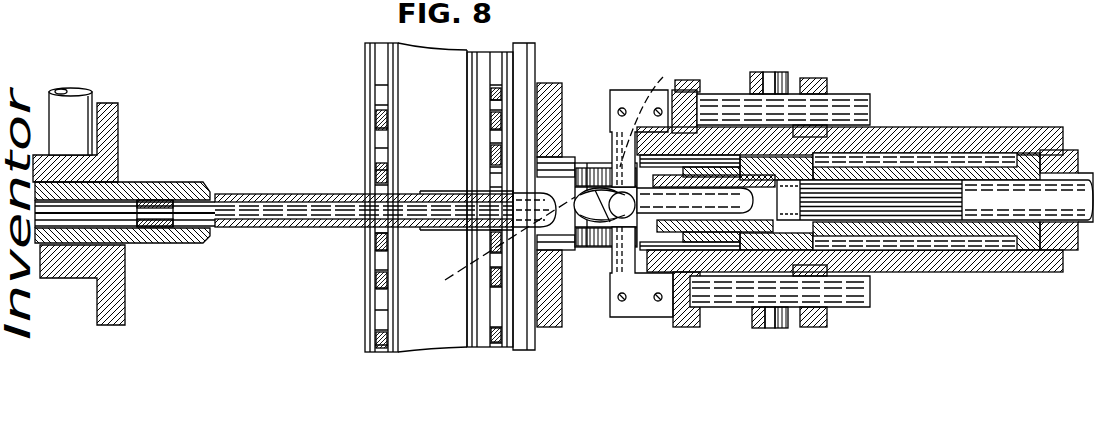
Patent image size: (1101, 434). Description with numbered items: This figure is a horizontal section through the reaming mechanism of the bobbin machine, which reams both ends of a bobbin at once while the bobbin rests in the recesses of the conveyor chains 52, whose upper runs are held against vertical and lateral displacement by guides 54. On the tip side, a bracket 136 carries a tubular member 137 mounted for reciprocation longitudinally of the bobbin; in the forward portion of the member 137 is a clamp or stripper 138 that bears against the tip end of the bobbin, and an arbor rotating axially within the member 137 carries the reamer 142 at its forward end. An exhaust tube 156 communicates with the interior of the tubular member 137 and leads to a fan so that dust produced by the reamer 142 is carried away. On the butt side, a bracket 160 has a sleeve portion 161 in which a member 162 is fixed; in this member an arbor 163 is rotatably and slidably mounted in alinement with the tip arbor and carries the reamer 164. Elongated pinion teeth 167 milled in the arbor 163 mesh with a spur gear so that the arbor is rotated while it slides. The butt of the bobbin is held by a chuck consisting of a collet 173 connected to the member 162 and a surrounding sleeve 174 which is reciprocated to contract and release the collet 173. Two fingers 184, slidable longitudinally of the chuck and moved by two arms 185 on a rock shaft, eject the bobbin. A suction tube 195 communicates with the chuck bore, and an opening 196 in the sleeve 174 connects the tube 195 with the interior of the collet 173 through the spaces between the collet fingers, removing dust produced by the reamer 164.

The chains 52 is at (380, 125).
The guides 54 is at (367, 62).
The bracket 136 is at (115, 288).
The tubular member 137 is at (148, 182).
The clamp or stripper 138 is at (165, 228).
The reamer 142 is at (80, 225).
The exhaust tube 156 is at (95, 90).
The bracket 160 is at (562, 90).
The sleeve portion 161 is at (900, 130).
The member 162 is at (935, 170).
The arbor 163 is at (1082, 175).
The reamer 164 is at (600, 225).
The elongated pinion teeth 167 is at (888, 200).
The collet 173 is at (553, 173).
The sleeve 174 is at (718, 250).
The fingers 184 is at (587, 165).
The arms 185 is at (790, 74).
The suction tube 195 is at (496, 251).
The opening 196 is at (663, 77).